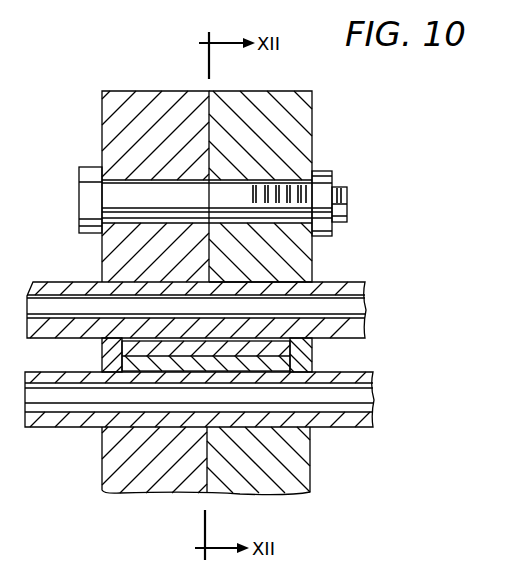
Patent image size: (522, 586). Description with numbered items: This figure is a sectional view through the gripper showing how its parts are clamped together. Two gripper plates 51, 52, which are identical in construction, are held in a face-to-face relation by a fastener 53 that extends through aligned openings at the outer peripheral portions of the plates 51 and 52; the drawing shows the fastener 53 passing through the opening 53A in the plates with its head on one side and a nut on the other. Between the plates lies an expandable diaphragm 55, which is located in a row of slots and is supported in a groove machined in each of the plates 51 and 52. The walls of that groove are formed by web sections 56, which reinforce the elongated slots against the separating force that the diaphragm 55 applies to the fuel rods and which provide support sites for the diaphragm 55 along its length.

The gripper plate 51 is at (150, 90).
The gripper plate 52 is at (313, 114).
The fastener 53 is at (87, 198).
The bolt hole 53A is at (124, 194).
The expandable diaphragm 55 is at (262, 350).
The web sections 56 is at (100, 357).